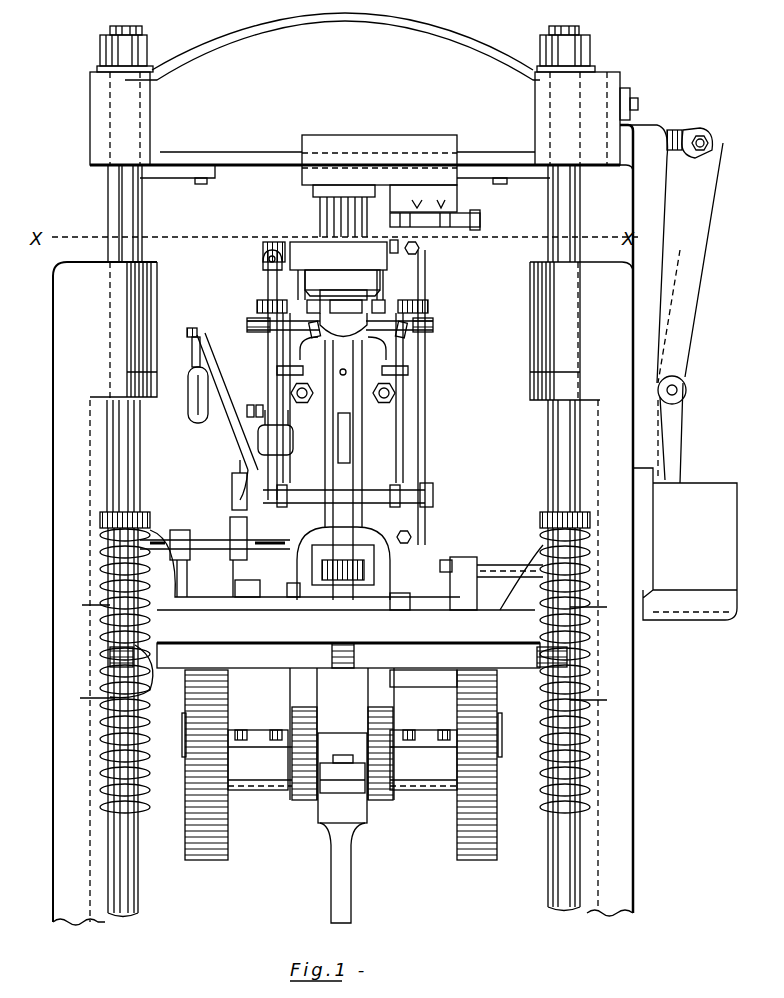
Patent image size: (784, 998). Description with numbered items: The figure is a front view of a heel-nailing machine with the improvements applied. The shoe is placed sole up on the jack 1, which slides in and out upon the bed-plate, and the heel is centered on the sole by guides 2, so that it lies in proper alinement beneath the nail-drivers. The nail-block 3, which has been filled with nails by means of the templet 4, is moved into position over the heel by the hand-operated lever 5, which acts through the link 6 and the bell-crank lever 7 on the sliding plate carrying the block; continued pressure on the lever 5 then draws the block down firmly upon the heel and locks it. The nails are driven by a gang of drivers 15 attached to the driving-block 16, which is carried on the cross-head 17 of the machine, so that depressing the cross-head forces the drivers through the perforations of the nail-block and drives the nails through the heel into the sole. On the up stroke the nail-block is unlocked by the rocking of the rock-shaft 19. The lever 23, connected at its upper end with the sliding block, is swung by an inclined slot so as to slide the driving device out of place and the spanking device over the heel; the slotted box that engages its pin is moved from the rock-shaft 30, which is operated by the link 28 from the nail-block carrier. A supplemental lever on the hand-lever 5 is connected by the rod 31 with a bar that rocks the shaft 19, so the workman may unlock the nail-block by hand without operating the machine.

The jack 1 is at (343, 470).
The guides 2 is at (307, 302).
The nail-block 3 is at (341, 270).
The templet 4 is at (361, 245).
The lever 5 is at (230, 422).
The link 6 is at (256, 443).
The bell-crank lever 7 is at (272, 391).
The drivers 15 is at (320, 221).
The driving-block 16 is at (313, 190).
The cross-head 17 is at (332, 52).
The rock-shaft 19 is at (205, 540).
The lever 23 is at (680, 418).
The link 28 is at (427, 448).
The rock-shaft 30 is at (485, 566).
The link or rod 31 is at (234, 461).